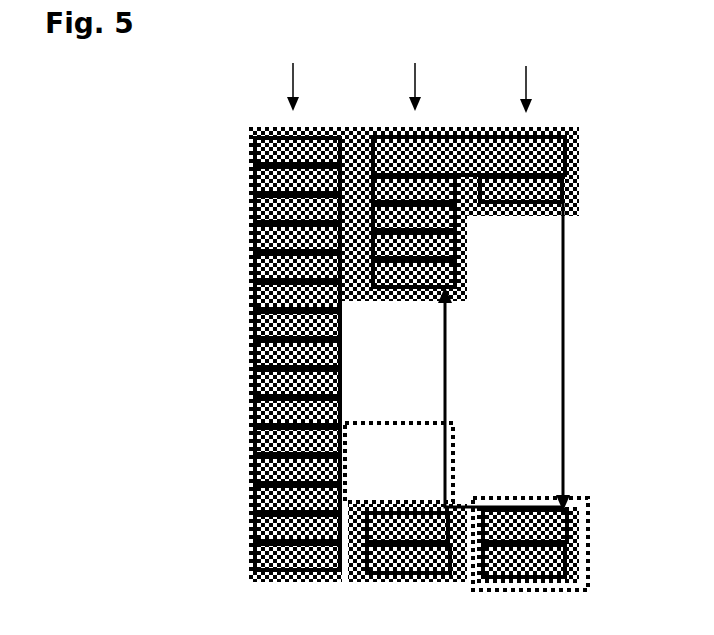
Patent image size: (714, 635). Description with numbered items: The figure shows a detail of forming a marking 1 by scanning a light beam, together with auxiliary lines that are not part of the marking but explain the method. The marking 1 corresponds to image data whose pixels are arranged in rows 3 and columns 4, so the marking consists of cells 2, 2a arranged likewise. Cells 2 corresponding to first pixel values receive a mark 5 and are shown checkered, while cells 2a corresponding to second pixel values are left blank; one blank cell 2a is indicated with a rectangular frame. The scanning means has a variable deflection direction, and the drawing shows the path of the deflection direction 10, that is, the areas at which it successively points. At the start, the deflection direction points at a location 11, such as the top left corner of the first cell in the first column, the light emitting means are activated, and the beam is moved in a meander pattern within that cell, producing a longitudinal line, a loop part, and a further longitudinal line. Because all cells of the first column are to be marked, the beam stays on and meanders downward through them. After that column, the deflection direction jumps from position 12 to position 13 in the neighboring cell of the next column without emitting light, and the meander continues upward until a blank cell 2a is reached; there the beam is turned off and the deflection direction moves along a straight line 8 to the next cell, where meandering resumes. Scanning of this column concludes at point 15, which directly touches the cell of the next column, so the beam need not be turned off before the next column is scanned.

The marking 1 is at (391, 343).
The cell 2 is at (508, 498).
The blank cell 2a is at (417, 423).
The row 3 is at (595, 173).
The column 4 is at (410, 71).
The mark 5 is at (337, 137).
The straight line 8 is at (443, 347).
The path of the deflection direction 10 is at (255, 360).
The starting location 11 is at (248, 130).
The end position of first column 12 is at (267, 578).
The starting point of next column 13 is at (377, 578).
The end point of column 15 is at (470, 130).